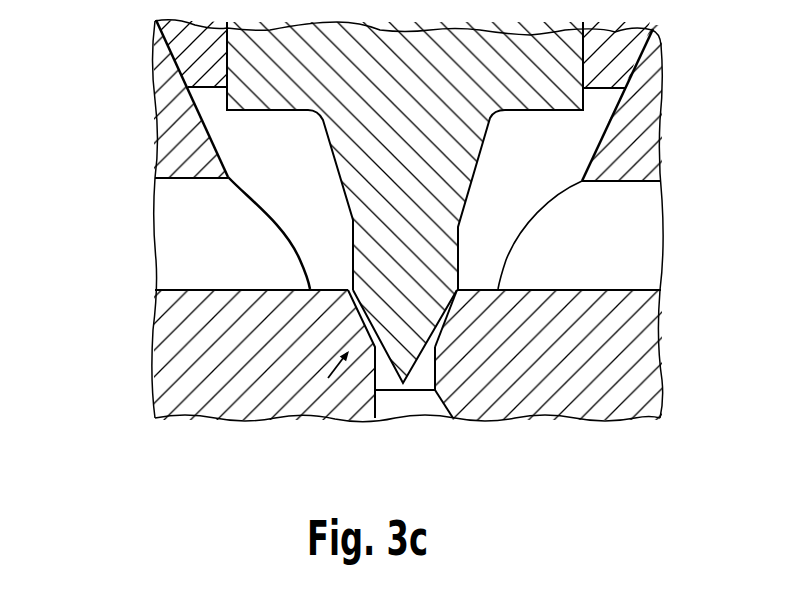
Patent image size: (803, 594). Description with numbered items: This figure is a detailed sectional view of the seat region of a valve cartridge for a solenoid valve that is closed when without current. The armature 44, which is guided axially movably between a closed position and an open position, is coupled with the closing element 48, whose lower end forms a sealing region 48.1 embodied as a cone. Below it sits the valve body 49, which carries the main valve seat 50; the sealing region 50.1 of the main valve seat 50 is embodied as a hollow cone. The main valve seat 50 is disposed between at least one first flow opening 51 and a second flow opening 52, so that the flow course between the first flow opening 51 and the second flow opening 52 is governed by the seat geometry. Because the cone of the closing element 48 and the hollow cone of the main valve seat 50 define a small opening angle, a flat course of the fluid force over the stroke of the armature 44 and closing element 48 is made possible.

The armature 44 is at (205, 57).
The closing element 48 is at (326, 255).
The sealing region of the closing element 48.1 is at (373, 393).
The valve body 49 is at (183, 365).
The main valve seat 50 is at (328, 378).
The sealing region of the main valve seat 50.1 is at (373, 393).
The first flow opening 51 is at (175, 262).
The second flow opening 52 is at (430, 408).